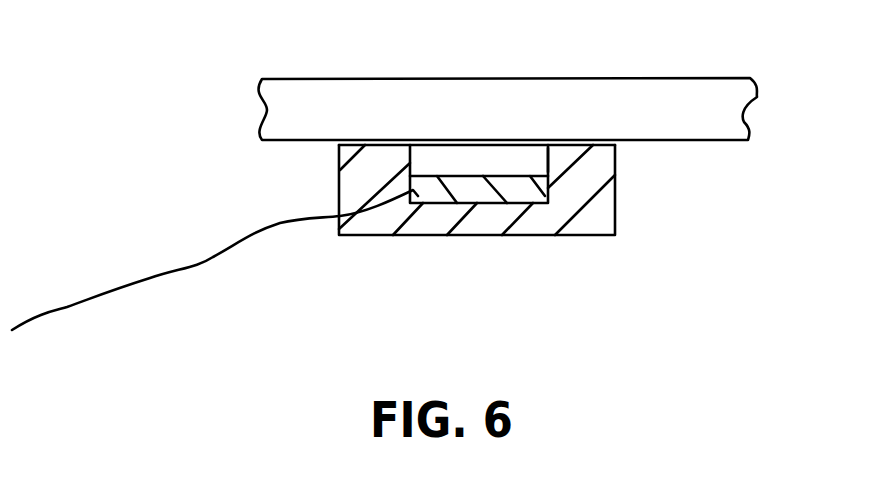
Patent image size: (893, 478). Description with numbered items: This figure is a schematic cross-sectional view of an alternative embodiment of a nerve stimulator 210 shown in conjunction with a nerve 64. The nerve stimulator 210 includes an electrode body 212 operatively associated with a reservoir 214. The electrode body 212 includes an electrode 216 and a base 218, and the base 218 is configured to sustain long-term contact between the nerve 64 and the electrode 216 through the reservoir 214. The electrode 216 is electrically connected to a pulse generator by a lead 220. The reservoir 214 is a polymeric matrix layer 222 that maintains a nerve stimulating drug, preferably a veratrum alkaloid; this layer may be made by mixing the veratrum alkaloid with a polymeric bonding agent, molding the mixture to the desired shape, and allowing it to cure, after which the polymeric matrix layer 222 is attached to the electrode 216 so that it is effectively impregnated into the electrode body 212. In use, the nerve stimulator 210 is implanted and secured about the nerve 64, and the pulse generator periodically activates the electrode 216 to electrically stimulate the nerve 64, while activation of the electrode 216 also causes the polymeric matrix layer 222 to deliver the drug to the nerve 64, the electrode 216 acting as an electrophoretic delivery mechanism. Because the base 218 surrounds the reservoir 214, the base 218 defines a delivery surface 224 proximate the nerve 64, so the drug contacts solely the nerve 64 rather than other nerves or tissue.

The nerve 64 is at (708, 92).
The nerve stimulator 210 is at (472, 210).
The electrode body 212 is at (500, 237).
The reservoir 214 is at (465, 158).
The electrode 216 is at (535, 193).
The base 218 is at (593, 225).
The lead 220 is at (118, 287).
The polymeric matrix layer 222 is at (438, 143).
The delivery surface 224 is at (548, 160).